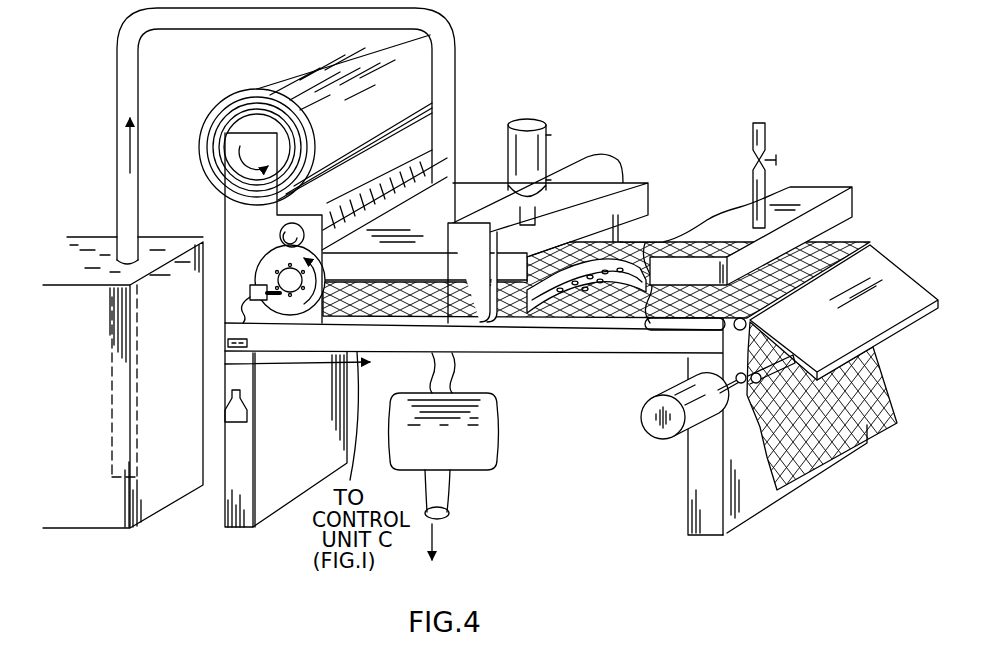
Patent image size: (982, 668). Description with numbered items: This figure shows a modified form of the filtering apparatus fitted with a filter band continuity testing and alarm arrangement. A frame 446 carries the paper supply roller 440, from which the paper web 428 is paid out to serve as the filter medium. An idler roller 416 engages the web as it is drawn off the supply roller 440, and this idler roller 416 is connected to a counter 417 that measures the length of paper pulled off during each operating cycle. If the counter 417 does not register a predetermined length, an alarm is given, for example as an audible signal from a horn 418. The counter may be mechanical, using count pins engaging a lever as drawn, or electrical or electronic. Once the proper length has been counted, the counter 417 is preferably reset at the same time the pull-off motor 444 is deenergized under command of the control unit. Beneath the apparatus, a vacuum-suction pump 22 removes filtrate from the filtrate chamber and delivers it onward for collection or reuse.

The paper supply roller 440 is at (350, 120).
The idler roller 416 is at (290, 265).
The counter 417 is at (242, 355).
The horn 418 is at (240, 415).
The frame 446 is at (240, 500).
The vacuum-suction pump 22 is at (458, 453).
The pull-off motor 444 is at (657, 414).
The paper web 428 is at (873, 369).